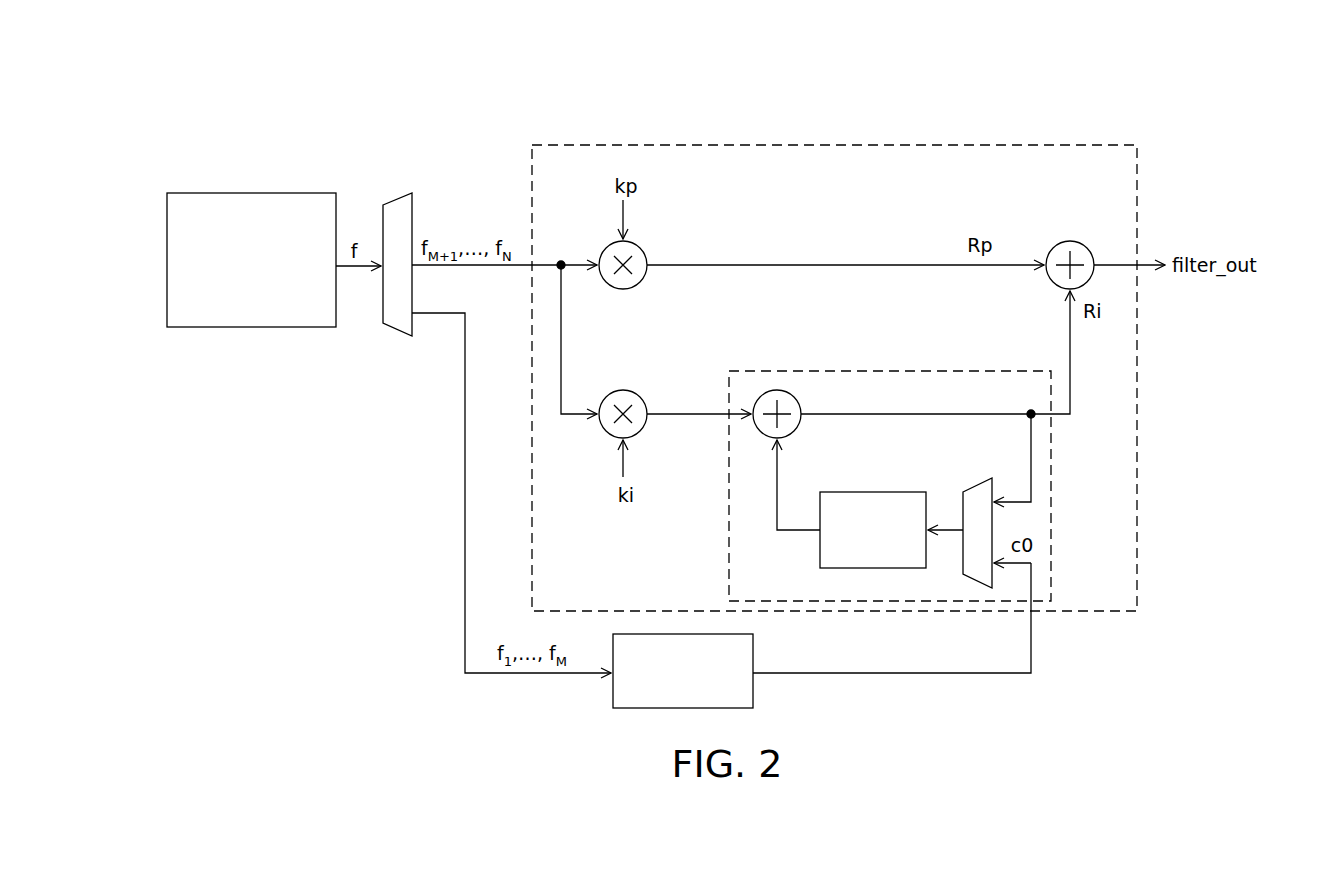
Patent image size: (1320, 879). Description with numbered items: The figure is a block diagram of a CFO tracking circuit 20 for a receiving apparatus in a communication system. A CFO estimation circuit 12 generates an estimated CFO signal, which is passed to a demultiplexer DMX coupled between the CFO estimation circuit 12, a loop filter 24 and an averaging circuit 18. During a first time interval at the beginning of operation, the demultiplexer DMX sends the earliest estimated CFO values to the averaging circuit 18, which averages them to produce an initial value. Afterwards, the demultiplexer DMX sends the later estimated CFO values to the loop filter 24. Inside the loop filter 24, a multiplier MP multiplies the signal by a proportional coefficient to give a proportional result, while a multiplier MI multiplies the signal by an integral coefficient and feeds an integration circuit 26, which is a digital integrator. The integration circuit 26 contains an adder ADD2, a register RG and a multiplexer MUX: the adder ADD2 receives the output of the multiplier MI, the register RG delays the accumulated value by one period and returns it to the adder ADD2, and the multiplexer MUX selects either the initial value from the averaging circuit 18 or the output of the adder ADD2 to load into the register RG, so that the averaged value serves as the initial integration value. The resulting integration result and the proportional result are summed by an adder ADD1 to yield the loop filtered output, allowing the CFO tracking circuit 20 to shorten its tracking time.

The CFO tracking circuit 20 is at (306, 98).
The CFO estimation circuit 12 is at (256, 193).
The averaging circuit 18 is at (753, 658).
The loop filter 24 is at (963, 145).
The integration circuit 26 is at (918, 371).
The demultiplexer DMX is at (397, 205).
The multiplier MP is at (645, 252).
The multiplier MI is at (645, 402).
The adder ADD1 is at (1070, 241).
The adder ADD2 is at (777, 390).
The register RG is at (866, 492).
The multiplexer MUX is at (978, 478).